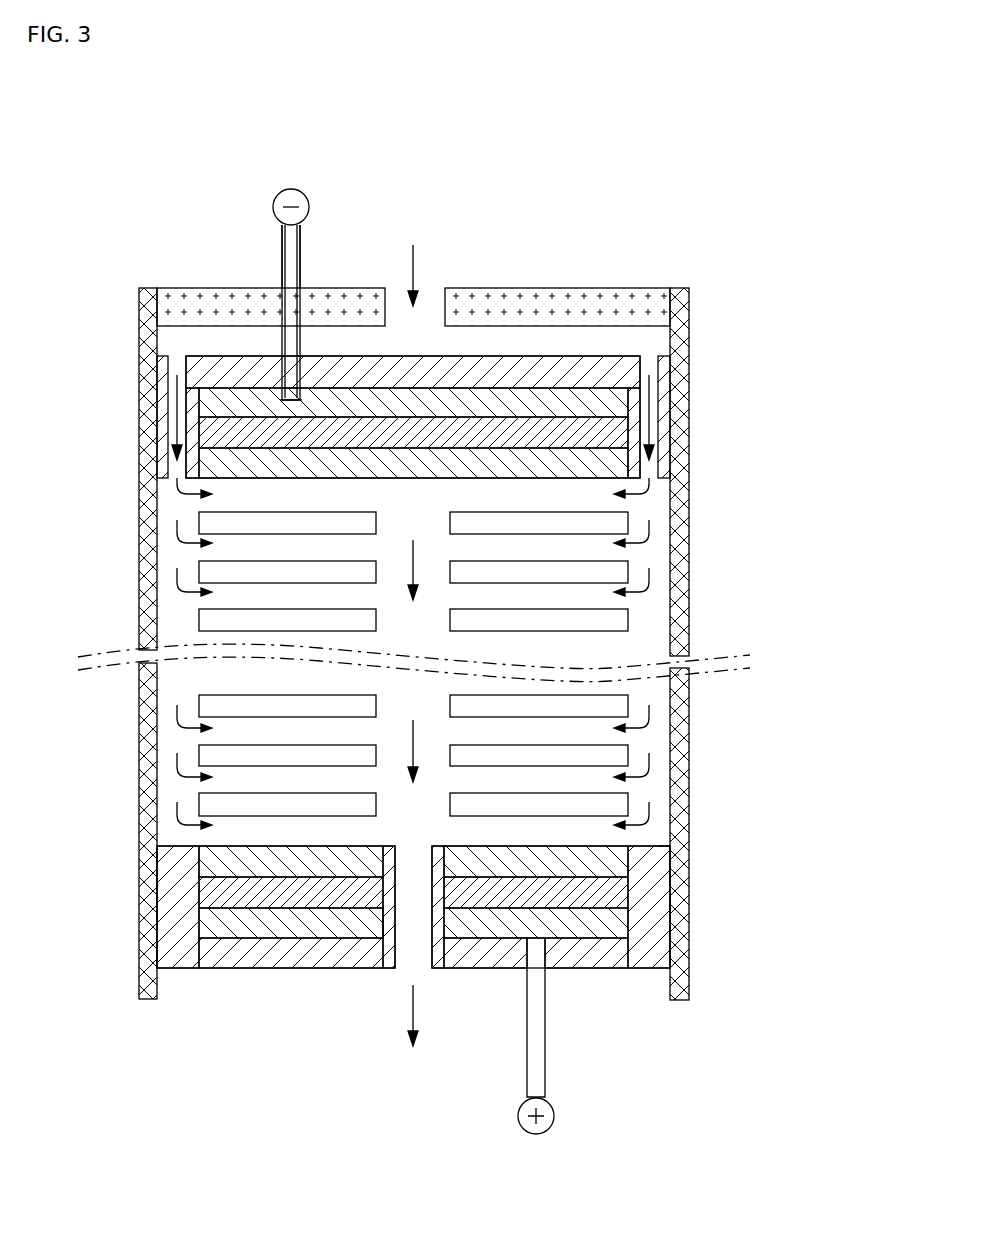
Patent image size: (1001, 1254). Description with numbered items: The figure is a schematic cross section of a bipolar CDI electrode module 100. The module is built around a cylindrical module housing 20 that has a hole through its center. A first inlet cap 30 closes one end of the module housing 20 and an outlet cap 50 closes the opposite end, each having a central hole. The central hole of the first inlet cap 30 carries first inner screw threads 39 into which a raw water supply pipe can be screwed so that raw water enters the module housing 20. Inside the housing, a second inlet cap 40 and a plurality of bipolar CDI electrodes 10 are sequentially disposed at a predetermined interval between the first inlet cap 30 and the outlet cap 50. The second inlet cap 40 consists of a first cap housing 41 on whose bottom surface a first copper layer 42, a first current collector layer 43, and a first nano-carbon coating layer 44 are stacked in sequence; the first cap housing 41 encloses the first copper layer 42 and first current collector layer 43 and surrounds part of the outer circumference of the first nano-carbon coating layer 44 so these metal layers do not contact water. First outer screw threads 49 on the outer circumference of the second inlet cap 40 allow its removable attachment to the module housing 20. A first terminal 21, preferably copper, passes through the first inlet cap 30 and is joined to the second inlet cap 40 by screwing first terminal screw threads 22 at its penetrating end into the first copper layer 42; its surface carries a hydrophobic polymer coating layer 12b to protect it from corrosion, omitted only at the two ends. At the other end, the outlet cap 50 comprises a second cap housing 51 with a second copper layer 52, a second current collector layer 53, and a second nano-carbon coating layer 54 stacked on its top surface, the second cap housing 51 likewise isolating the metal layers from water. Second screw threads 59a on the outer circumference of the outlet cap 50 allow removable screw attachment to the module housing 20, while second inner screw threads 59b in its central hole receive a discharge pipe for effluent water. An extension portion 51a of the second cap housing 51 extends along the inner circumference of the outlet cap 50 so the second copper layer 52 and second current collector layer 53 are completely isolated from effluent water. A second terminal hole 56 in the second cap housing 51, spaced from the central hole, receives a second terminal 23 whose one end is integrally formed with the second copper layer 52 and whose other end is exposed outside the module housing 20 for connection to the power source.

The bipolar CDI electrode module 100 is at (392, 114).
The bipolar CDI electrodes 10 is at (199, 618).
The hydrophobic polymer coating layer 12b is at (282, 240).
The module housing 20 is at (139, 462).
The first terminal 21 is at (290, 268).
The first terminal screw threads 22 is at (300, 398).
The second terminal 23 is at (545, 1067).
The first inlet cap 30 is at (550, 288).
The first inner screw threads 39 is at (441, 300).
The second inlet cap 40 is at (750, 355).
The first cap housing 41 is at (616, 375).
The first copper layer 42 is at (616, 405).
The first current collector layer 43 is at (616, 435).
The first nano-carbon coating layer 44 is at (616, 465).
The first outer screw threads 49 is at (673, 474).
The outlet cap 50 is at (752, 845).
The second cap housing 51 is at (660, 955).
The extension portion 51a is at (393, 925).
The second copper layer 52 is at (618, 923).
The second current collector layer 53 is at (618, 893).
The second nano-carbon coating layer 54 is at (618, 862).
The second terminal hole 56 is at (547, 953).
The second screw threads 59a is at (670, 847).
The second inner screw threads 59b is at (432, 968).